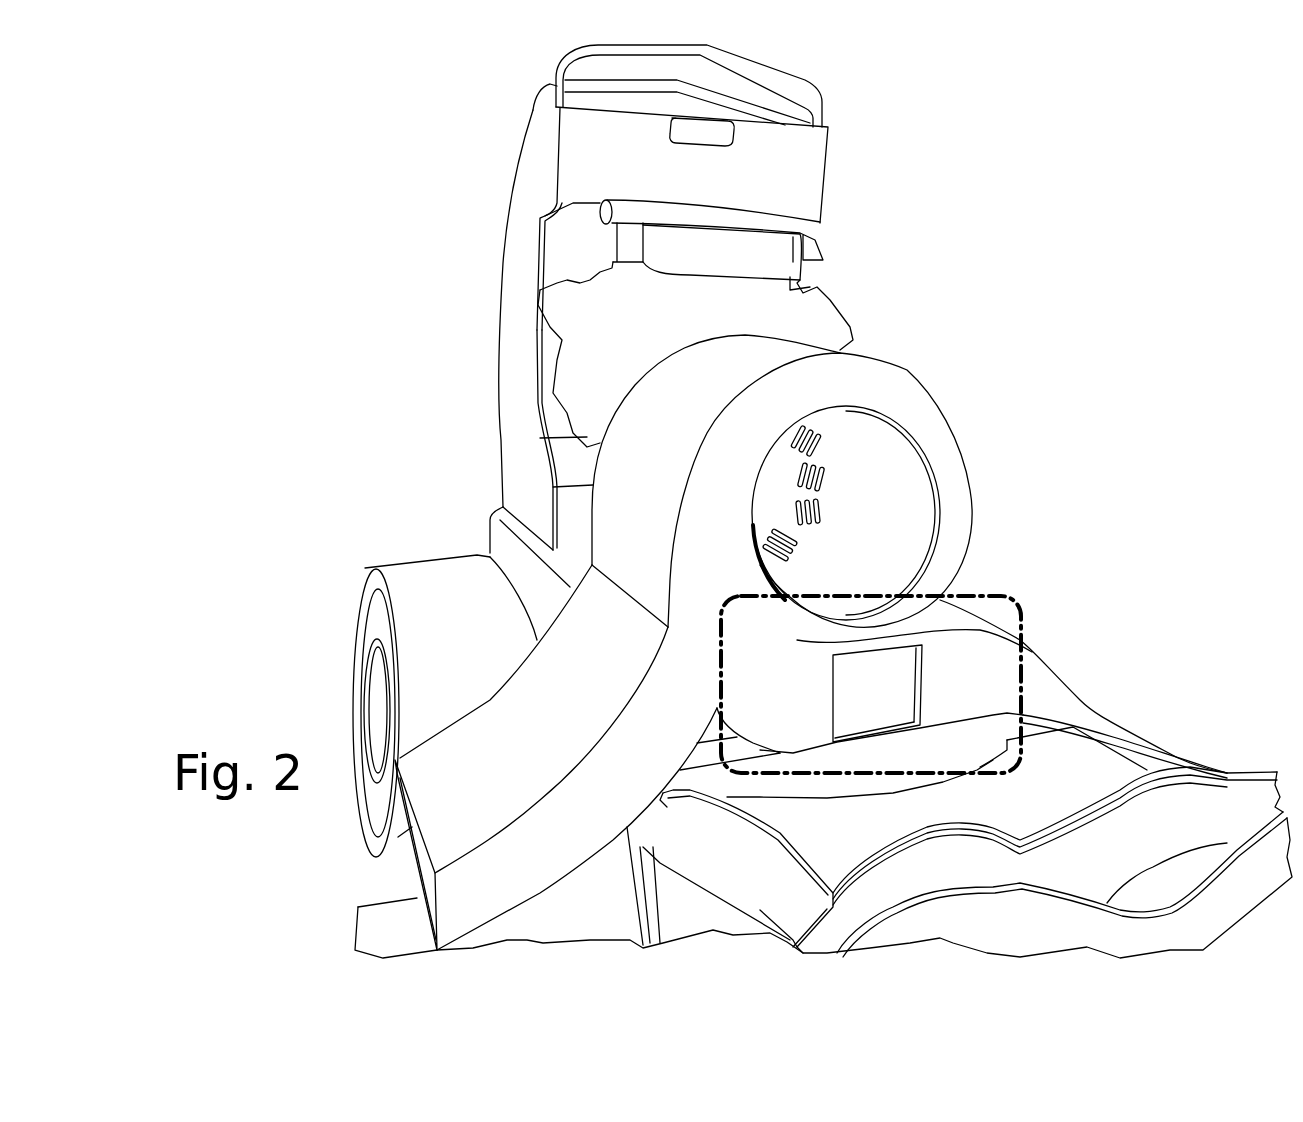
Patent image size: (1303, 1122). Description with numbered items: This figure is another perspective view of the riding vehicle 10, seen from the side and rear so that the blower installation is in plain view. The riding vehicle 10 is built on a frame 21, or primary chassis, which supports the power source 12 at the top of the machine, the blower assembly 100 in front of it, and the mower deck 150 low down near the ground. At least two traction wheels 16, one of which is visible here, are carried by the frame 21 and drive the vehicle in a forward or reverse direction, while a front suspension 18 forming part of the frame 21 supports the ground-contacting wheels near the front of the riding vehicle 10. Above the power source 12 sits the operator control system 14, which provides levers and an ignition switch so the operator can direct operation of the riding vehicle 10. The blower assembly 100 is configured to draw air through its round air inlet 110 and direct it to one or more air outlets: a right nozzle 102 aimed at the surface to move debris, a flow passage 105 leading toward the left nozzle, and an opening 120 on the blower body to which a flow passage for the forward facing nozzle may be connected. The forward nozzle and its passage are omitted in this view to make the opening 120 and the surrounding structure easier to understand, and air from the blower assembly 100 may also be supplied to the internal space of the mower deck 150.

The riding vehicle 10 is at (948, 285).
The power source 12 is at (828, 302).
The operator control system 14 is at (847, 93).
The traction wheels 16 is at (430, 563).
The front suspension 18 is at (1245, 753).
The frame 21 is at (560, 605).
The blower assembly 100 is at (960, 440).
The right nozzle 102 is at (433, 847).
The flow passage 105 is at (1097, 715).
The air inlet 110 is at (905, 520).
The opening 120 is at (920, 690).
The mower deck 150 is at (590, 912).